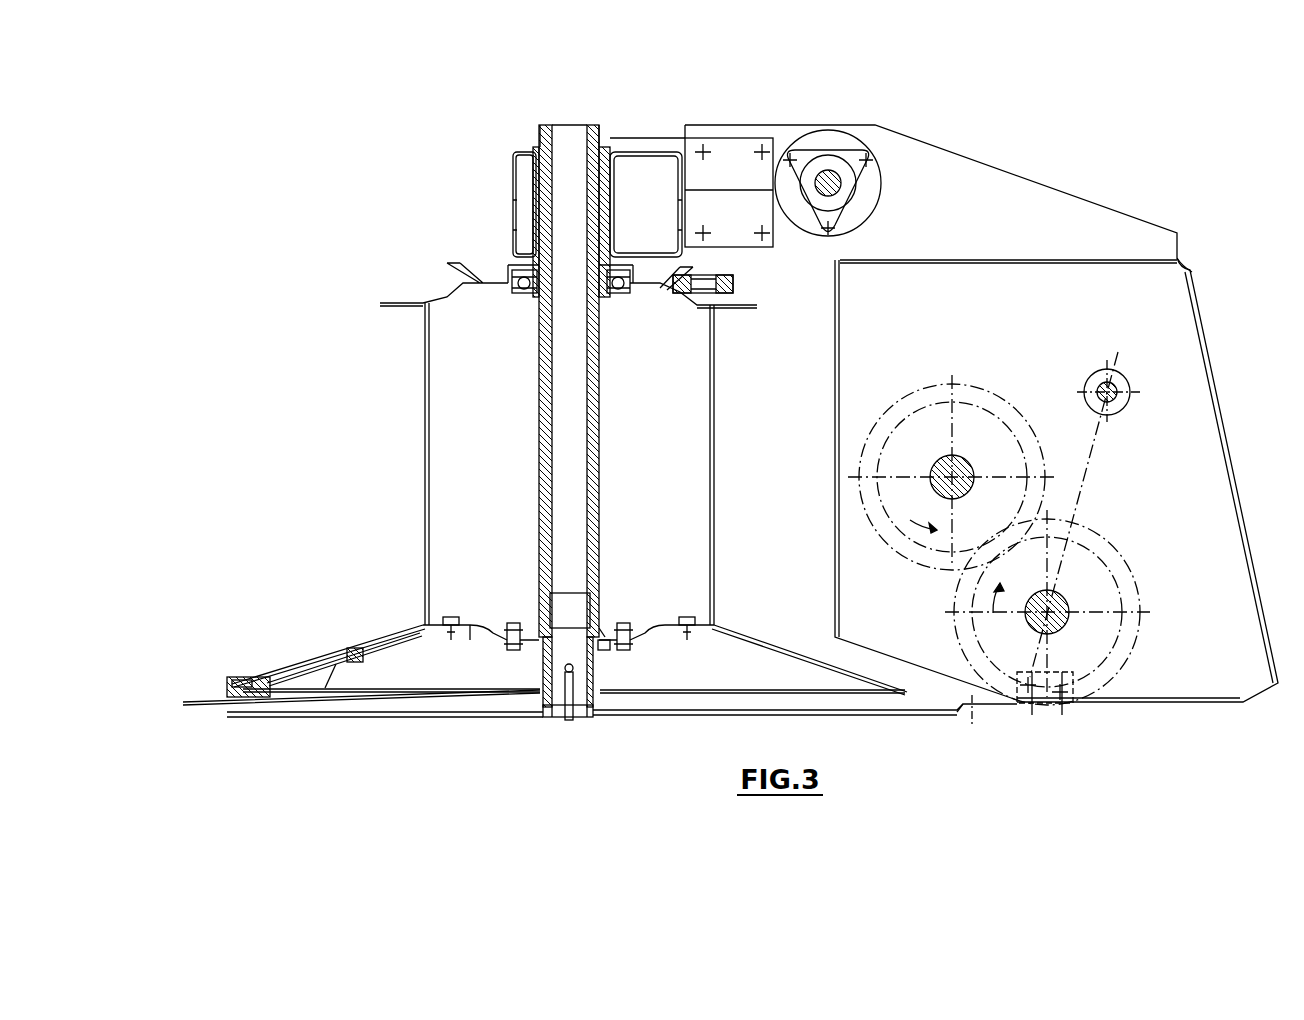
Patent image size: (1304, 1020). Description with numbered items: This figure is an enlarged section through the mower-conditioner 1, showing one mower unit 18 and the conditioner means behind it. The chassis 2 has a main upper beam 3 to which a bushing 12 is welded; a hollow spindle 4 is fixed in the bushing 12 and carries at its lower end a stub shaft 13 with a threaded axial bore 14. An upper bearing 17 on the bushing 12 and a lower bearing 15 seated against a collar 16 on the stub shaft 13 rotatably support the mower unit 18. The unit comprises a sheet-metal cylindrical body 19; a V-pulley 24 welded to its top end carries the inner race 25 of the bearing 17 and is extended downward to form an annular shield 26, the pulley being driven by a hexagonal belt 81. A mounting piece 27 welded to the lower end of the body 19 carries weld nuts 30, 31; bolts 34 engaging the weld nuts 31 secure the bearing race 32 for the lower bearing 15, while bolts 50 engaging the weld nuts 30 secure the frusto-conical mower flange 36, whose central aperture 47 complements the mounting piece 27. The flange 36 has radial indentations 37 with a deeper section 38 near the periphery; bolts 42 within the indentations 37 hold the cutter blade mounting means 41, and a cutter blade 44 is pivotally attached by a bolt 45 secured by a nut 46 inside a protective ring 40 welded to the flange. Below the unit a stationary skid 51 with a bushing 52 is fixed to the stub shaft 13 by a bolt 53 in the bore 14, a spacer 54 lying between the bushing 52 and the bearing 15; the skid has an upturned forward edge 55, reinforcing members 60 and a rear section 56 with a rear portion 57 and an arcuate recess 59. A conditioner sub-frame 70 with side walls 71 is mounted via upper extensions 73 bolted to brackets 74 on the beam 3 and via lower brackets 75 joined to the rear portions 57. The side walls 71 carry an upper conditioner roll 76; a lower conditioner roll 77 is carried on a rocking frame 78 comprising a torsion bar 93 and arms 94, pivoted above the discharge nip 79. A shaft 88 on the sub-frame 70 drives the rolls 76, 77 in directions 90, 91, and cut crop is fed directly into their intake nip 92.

The mower-conditioner 1 is at (1090, 170).
The chassis 2 is at (637, 140).
The main upper beam 3 is at (513, 185).
The hollow spindle 4 is at (602, 130).
The bushing 12 is at (540, 142).
The stub shaft 13 is at (567, 593).
The threaded axial bore 14 is at (565, 718).
The lower bearing 15 is at (612, 650).
The collar 16 is at (608, 628).
The upper bearing 17 is at (614, 295).
The mower unit 18 is at (397, 437).
The cylindrical body 19 is at (425, 527).
The V-pulley 24 is at (465, 270).
The inner race 25 is at (508, 292).
The annular shield 26 is at (748, 303).
The mounting piece 27 is at (713, 612).
The weld nut 30 is at (458, 622).
The weld nut 31 is at (510, 625).
The bearing race 32 is at (505, 695).
The bolt 34 is at (640, 646).
The mower flange 36 is at (293, 675).
The indentation 37 is at (325, 657).
The deeper section 38 is at (267, 677).
The protective ring 40 is at (232, 688).
The cutter blade mounting means 41 is at (298, 700).
The bolt 42 is at (348, 650).
The cutter blade 44 is at (197, 708).
The bolt 45 is at (253, 712).
The nut 46 is at (243, 682).
The central aperture 47 is at (475, 638).
The bolt 50 is at (453, 635).
The skid 51 is at (738, 700).
The bushing 52 is at (610, 700).
The bolt 53 is at (580, 718).
The spacer 54 is at (540, 700).
The upturned forward edge 55 is at (233, 710).
The rear section 56 is at (782, 715).
The rear portion 57 is at (977, 710).
The arcuate recess 59 is at (958, 713).
The reinforcing member 60 is at (373, 707).
The conditioner sub-frame 70 is at (1204, 335).
The side wall 71 is at (1226, 442).
The upper extension 73 is at (978, 162).
The bracket 74 is at (720, 140).
The lower bracket 75 is at (1047, 707).
The upper conditioner roll 76 is at (1010, 407).
The lower conditioner roll 77 is at (1127, 557).
The rocking frame 78 is at (1093, 463).
The discharge nip 79 is at (1055, 513).
The hexagonal belt 81 is at (735, 285).
The shaft 88 is at (843, 190).
The direction of rotation 90 is at (913, 523).
The direction of rotation 91 is at (993, 613).
The intake nip 92 is at (947, 583).
The torsion bar 93 is at (1120, 385).
The arm 94 is at (1100, 427).